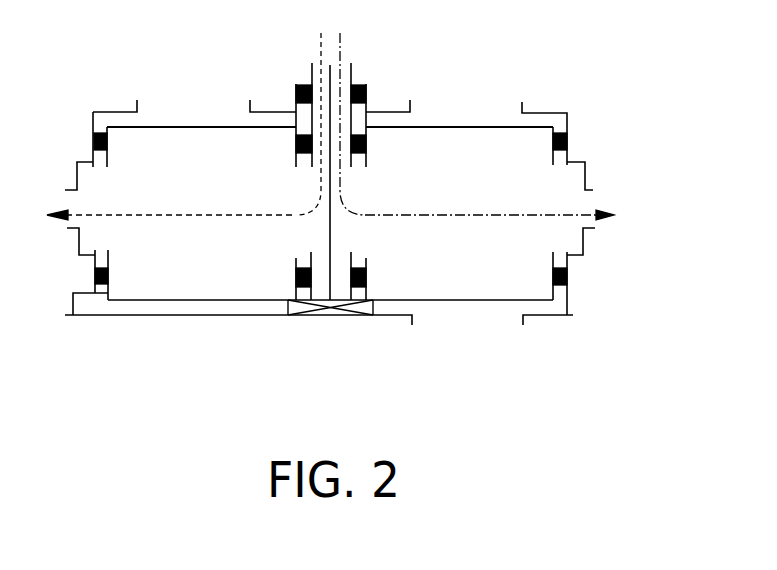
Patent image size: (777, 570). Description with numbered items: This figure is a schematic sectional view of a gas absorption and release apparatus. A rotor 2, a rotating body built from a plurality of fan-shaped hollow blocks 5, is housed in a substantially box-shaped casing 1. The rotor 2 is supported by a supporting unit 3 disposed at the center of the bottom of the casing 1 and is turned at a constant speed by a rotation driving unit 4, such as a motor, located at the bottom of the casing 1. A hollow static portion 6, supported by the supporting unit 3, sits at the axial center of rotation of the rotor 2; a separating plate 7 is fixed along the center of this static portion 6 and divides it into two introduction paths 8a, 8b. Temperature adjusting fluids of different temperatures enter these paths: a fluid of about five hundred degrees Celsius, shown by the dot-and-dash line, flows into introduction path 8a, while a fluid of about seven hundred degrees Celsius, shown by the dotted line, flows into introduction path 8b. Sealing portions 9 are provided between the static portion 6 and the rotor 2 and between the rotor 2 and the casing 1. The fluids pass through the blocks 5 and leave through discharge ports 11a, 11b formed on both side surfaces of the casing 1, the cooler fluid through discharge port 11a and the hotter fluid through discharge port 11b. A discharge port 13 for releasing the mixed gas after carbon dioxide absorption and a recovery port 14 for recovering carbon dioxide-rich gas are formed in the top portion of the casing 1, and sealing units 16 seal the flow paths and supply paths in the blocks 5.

The casing 1 is at (562, 112).
The rotor 2 is at (468, 127).
The supporting unit 3 is at (332, 315).
The rotation driving unit 4 is at (92, 308).
The hollow block 5 is at (193, 282).
The hollow static portion 6 is at (352, 68).
The separating plate 7 is at (328, 233).
The introduction path 8a is at (343, 82).
The introduction path 8b is at (313, 68).
The sealing portion 9 is at (297, 92).
The discharge port 11a is at (593, 185).
The discharge port 11b is at (73, 187).
The discharge port 13 is at (495, 110).
The recovery port 14 is at (154, 110).
The sealing unit 16 is at (95, 142).